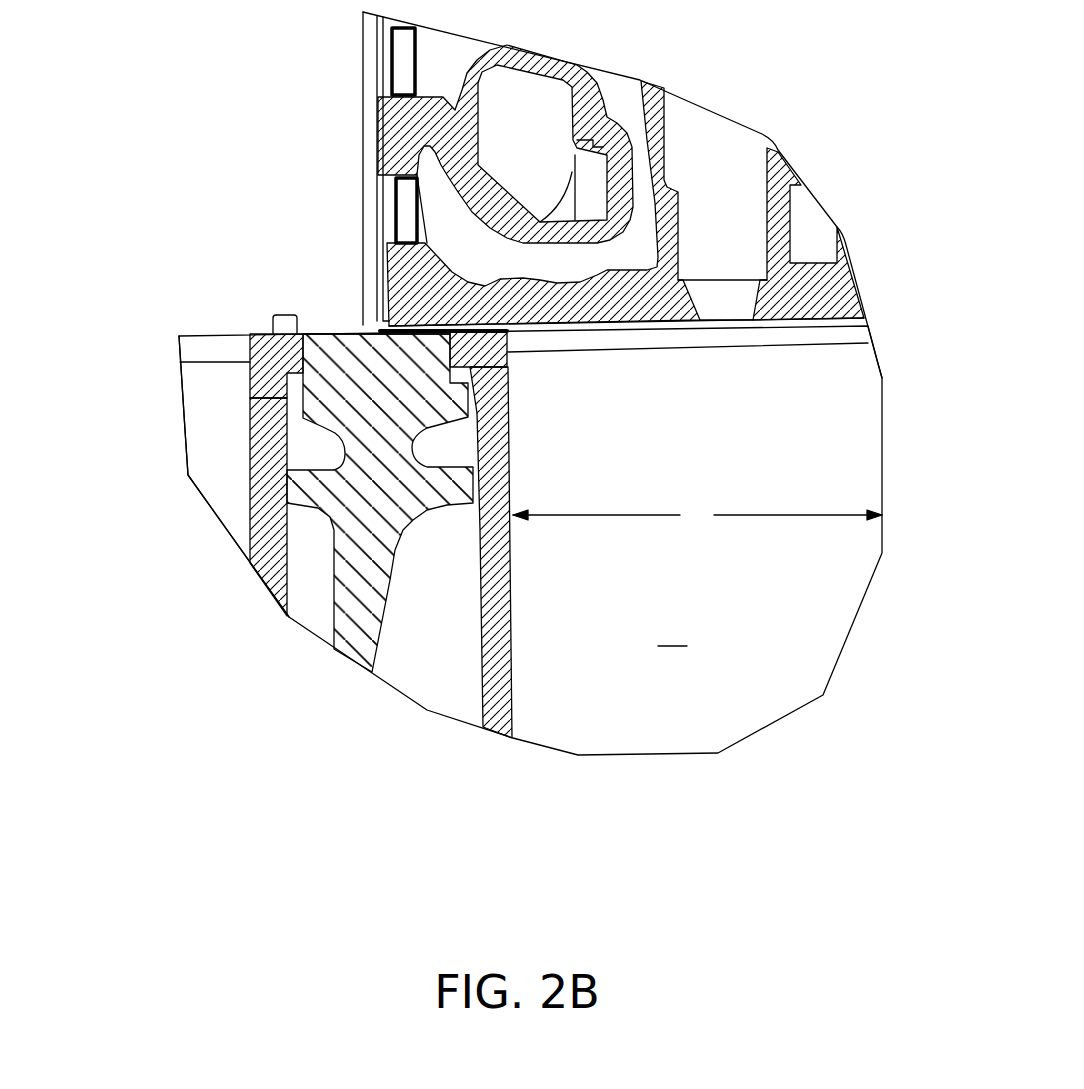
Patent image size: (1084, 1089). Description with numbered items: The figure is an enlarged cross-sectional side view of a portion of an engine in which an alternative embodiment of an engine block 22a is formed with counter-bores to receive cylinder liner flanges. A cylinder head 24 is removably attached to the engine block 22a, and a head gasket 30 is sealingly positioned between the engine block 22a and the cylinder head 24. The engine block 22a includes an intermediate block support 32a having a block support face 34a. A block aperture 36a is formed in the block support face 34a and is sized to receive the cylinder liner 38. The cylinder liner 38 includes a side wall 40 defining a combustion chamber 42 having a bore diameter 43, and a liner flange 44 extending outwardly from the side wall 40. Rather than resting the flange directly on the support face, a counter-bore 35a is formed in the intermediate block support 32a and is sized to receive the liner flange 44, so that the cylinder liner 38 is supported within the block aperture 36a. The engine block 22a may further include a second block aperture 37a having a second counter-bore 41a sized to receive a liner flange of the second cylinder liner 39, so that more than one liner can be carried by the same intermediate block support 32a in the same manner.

The cylinder head 24 is at (853, 287).
The liner flange 44 is at (412, 240).
The block support face 34a is at (340, 332).
The second counter-bore 41a is at (250, 335).
The second block aperture 37a is at (250, 397).
The second cylinder liner 39 is at (228, 492).
The intermediate block support 32a is at (360, 587).
The engine block 22a is at (350, 475).
The head gasket 30 is at (507, 352).
The counter-bore 35a is at (507, 370).
The block aperture 36a is at (508, 407).
The bore diameter 43 is at (697, 516).
The combustion chamber 42 is at (672, 633).
The side wall 40 is at (543, 535).
The cylinder liner 38 is at (723, 715).